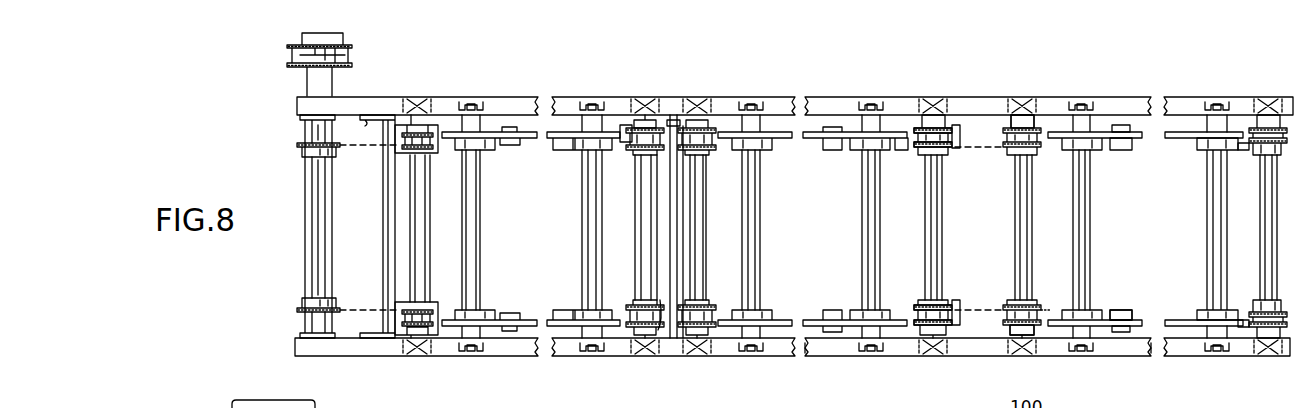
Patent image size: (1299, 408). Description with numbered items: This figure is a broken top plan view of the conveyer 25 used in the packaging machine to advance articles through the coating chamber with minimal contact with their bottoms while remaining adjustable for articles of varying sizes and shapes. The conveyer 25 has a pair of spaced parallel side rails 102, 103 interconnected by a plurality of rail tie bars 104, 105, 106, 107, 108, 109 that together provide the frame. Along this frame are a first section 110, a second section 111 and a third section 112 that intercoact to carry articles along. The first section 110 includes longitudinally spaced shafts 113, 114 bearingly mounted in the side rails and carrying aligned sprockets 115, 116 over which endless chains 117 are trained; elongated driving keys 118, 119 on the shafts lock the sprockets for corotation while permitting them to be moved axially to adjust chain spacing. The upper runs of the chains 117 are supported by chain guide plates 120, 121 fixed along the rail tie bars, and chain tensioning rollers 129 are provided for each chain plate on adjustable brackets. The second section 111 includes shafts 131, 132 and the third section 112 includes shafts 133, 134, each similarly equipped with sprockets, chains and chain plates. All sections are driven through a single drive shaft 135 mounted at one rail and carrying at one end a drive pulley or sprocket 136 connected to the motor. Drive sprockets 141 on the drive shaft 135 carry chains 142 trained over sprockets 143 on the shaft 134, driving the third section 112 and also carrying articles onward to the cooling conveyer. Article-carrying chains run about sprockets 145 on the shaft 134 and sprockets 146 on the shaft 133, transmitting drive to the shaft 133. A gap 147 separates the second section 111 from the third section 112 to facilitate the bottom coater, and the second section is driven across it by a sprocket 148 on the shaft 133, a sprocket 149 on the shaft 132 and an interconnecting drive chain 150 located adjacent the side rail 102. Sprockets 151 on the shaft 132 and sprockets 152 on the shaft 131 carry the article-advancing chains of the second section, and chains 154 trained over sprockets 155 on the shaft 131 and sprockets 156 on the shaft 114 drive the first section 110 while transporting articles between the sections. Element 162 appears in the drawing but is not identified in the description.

The conveyer 25 is at (1235, 96).
The side rail 102 is at (998, 98).
The side rail 103 is at (980, 354).
The rail tie bar 104 is at (1208, 223).
The rail tie bar 105 is at (1091, 230).
The rail tie bar 106 is at (866, 249).
The rail tie bar 107 is at (760, 225).
The rail tie bar 108 is at (584, 235).
The rail tie bar 109 is at (482, 186).
The first section 110 is at (1126, 374).
The second section 111 is at (844, 376).
The third section 112 is at (547, 373).
The shaft 113 is at (1264, 238).
The shaft 114 is at (1030, 223).
The sprocket 115 is at (1244, 120).
The sprocket 116 is at (1037, 128).
The endless chain 117 is at (1246, 150).
The driving key 118 is at (1265, 192).
The driving key 119 is at (1021, 194).
The chain guide plate 120 is at (1192, 150).
The chain guide plate 121 is at (1134, 322).
The chain tensioning roller 129 is at (1126, 150).
The shaft 131 is at (923, 233).
The shaft 132 is at (710, 177).
The shaft 133 is at (637, 228).
The shaft 134 is at (428, 228).
The drive shaft 135 is at (308, 250).
The drive pulley or sprocket 136 is at (290, 68).
The drive sprocket 141 is at (302, 152).
The chain 142 is at (383, 158).
The sprocket 143 is at (430, 155).
The sprocket 145 is at (432, 127).
The sprocket 146 is at (627, 151).
The gap 147 is at (662, 332).
The sprocket 148 is at (644, 120).
The sprocket 149 is at (705, 120).
The interconnecting drive chain 150 is at (674, 120).
The sprocket 151 is at (712, 135).
The sprocket 152 is at (922, 130).
The chain 154 is at (975, 148).
The sprocket 155 is at (952, 154).
The sprocket 156 is at (1012, 155).
The shaft 162 is at (681, 243).